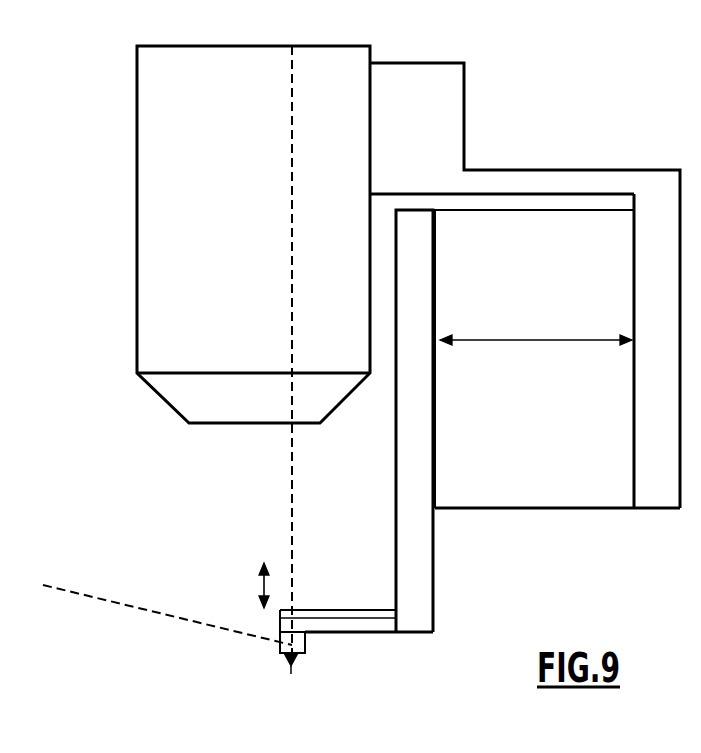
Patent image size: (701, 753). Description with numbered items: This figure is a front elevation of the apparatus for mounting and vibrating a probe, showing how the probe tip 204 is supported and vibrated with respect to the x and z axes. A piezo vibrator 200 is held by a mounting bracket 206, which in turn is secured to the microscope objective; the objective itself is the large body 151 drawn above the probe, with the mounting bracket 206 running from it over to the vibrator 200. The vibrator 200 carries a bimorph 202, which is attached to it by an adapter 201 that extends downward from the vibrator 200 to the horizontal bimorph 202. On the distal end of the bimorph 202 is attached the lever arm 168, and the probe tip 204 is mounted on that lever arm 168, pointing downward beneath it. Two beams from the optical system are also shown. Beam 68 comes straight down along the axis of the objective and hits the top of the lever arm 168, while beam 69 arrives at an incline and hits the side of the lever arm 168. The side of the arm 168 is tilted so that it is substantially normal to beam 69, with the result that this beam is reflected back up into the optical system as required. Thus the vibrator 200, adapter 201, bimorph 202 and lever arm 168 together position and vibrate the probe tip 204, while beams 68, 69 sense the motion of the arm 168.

The supply reservoir housing 151 is at (135, 140).
The beam 68 is at (292, 497).
The beam 69 is at (78, 593).
The mounting bracket 206 is at (503, 170).
The piezo vibrator 200 is at (532, 508).
The adapter 201 is at (435, 590).
The bimorph 202 is at (365, 610).
The lever arm 168 is at (272, 646).
The probe tip 204 is at (310, 655).